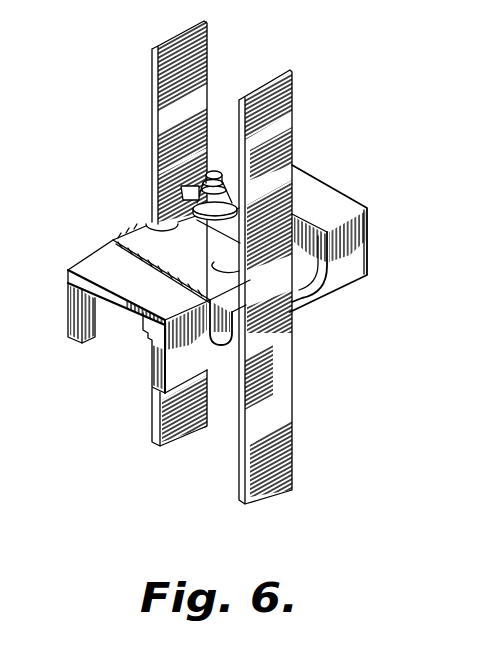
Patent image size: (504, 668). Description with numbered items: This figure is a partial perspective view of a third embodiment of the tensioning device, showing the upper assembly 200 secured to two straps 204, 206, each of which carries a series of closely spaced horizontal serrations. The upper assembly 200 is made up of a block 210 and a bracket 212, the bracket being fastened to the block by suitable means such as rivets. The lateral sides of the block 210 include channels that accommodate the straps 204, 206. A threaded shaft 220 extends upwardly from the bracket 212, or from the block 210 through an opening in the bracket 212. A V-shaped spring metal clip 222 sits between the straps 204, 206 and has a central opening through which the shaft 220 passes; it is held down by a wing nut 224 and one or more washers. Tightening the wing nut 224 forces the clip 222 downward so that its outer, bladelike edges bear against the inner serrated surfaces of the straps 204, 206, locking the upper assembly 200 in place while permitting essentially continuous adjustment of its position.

The upper assembly 200 is at (118, 224).
The strap 204 is at (155, 136).
The strap 206 is at (283, 125).
The block 210 is at (85, 265).
The bracket 212 is at (322, 259).
The threaded shaft 220 is at (213, 173).
The V-shaped spring metal clip 222 is at (233, 230).
The wing nut 224 is at (222, 177).